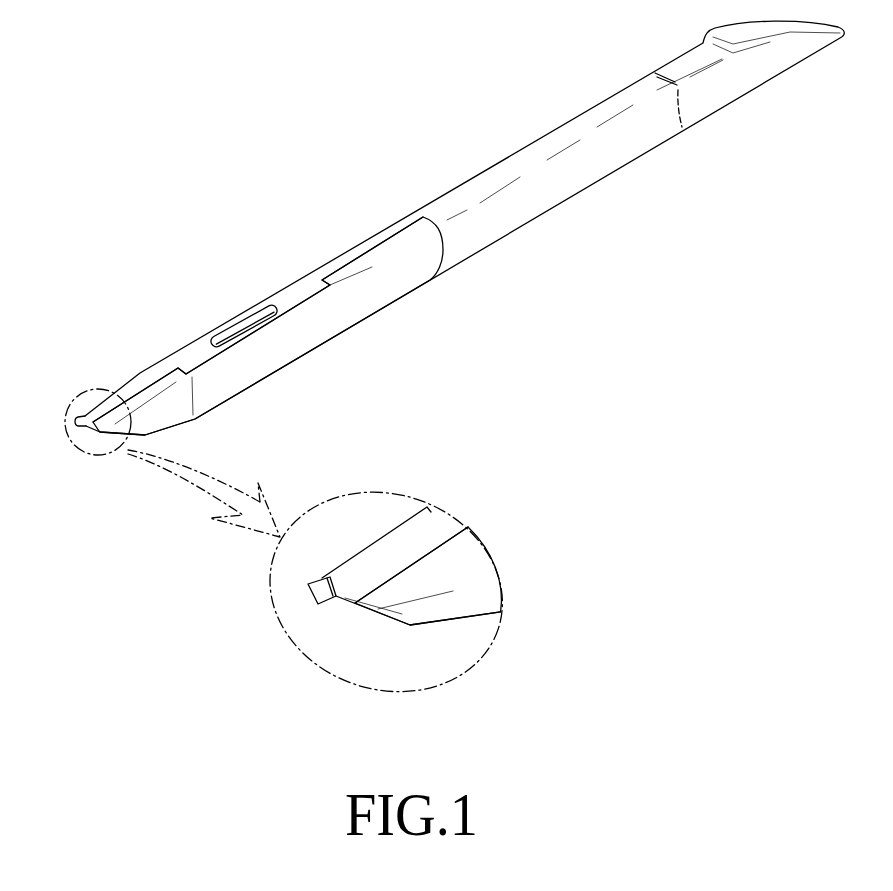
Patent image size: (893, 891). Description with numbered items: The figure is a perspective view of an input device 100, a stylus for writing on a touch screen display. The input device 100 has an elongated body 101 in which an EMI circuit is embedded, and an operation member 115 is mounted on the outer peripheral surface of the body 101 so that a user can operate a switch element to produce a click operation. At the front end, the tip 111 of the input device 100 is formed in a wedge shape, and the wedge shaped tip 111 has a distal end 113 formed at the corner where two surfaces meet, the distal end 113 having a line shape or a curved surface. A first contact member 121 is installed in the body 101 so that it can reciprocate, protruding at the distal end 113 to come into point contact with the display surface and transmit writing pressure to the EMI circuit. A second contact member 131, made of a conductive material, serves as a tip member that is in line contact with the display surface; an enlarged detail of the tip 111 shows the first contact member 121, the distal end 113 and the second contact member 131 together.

The input device 100 is at (418, 125).
The body 101 is at (568, 178).
The tip 111 is at (136, 370).
The distal end 113 is at (93, 432).
The operation member 115 is at (237, 325).
The first contact member 121 is at (312, 598).
The second contact member 131 is at (380, 288).